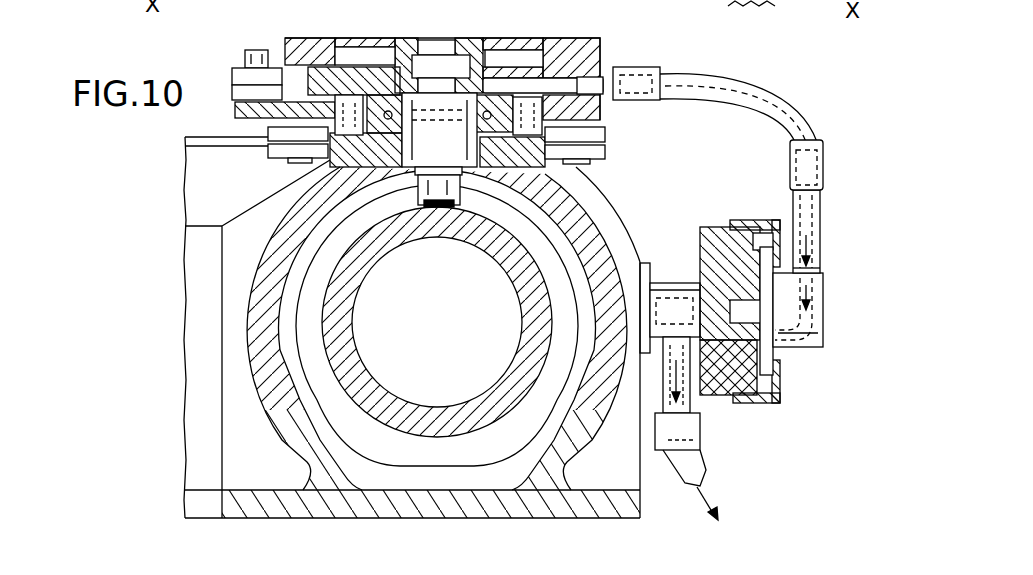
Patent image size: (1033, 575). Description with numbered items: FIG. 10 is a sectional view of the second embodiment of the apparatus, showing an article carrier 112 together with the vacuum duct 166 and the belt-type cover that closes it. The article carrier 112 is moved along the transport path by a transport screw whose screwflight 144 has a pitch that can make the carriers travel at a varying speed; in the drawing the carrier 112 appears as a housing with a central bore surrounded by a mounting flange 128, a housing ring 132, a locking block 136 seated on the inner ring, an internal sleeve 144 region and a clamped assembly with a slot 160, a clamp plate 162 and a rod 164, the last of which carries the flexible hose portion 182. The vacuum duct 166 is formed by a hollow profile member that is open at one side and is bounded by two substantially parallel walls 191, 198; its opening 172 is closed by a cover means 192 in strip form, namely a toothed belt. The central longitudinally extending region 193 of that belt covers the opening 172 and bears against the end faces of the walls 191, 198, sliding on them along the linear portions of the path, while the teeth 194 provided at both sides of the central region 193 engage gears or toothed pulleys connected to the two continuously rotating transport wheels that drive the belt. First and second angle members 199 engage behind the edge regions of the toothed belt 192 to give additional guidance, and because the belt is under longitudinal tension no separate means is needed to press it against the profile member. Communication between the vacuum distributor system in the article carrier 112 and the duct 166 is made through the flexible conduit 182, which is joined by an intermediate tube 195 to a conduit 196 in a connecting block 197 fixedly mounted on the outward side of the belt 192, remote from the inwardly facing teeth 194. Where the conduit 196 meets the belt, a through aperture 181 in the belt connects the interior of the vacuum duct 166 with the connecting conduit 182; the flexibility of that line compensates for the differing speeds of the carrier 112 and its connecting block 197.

The article carrier 112 is at (452, 158).
The flange member 128 is at (368, 145).
The housing 132 is at (260, 373).
The locking block 136 is at (438, 192).
The screwflight 144 is at (305, 307).
The slot 160 is at (352, 57).
The clamp plate 162 is at (349, 45).
The rod 164 is at (553, 84).
The vacuum duct 166 is at (742, 307).
The opening 172 is at (710, 395).
The through aperture 181 is at (795, 350).
The flexible conduit or hose portion 182 is at (793, 113).
The wall 191 is at (690, 383).
The cover means 192 is at (765, 403).
The central longitudinally extending region 193 is at (735, 283).
The teeth 194 is at (740, 242).
The intermediate tube 195 is at (820, 257).
The conduit 196 is at (793, 0).
The connecting block 197 is at (822, 313).
The wall 198 is at (700, 420).
The angle members 199 is at (762, 220).